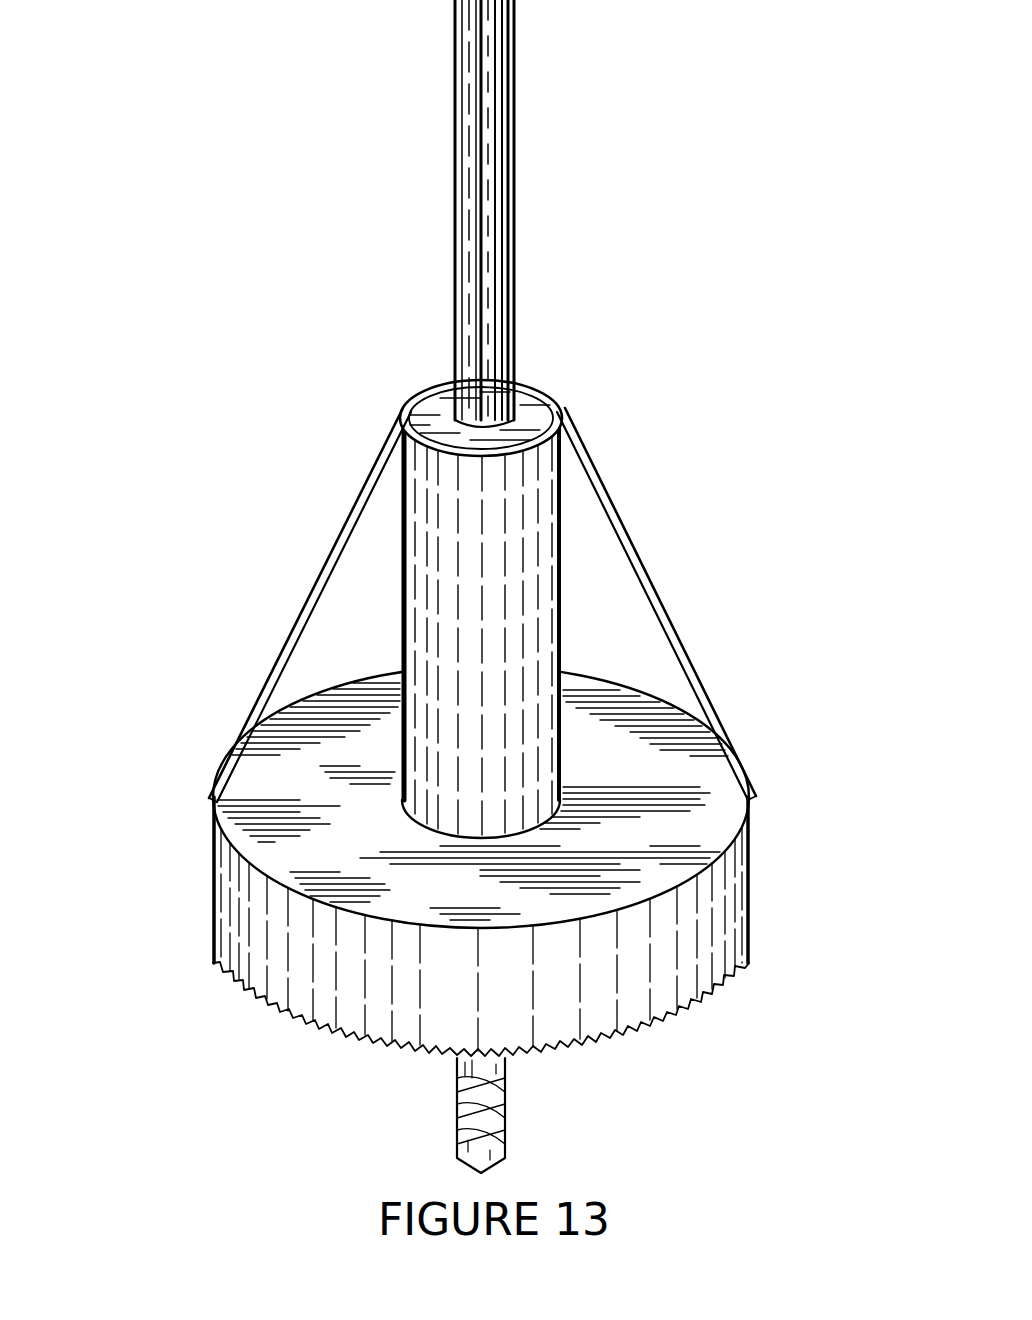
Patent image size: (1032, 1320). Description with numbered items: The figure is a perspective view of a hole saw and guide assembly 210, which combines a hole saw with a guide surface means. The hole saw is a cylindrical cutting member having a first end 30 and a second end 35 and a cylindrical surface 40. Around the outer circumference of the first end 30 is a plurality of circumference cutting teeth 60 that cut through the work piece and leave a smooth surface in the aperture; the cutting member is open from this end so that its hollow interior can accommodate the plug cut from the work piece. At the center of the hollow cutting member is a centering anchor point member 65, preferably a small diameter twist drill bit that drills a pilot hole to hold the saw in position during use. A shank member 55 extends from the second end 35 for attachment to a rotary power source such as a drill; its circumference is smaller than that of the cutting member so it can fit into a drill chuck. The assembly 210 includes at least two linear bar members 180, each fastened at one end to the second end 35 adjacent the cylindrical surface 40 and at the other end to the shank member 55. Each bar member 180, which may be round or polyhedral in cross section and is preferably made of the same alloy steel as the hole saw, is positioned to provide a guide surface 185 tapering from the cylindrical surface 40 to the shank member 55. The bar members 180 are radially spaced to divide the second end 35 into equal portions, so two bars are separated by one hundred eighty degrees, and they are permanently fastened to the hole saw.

The hole saw and guide assembly 210 is at (776, 444).
The shank member 55 is at (505, 193).
The linear bar members 180 is at (300, 607).
The guide surface 185 is at (355, 498).
The second end 35 is at (213, 812).
The cylindrical surface 40 is at (260, 898).
The circumference cutting teeth 60 is at (287, 1020).
The first end 30 is at (548, 1062).
The centering anchor point member 65 is at (457, 1130).